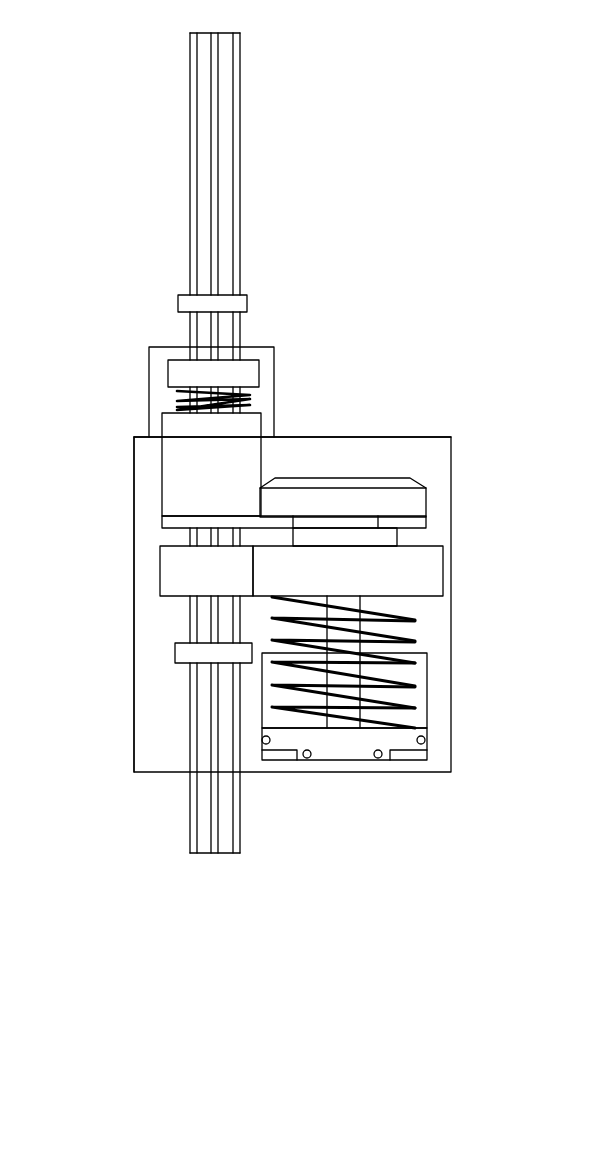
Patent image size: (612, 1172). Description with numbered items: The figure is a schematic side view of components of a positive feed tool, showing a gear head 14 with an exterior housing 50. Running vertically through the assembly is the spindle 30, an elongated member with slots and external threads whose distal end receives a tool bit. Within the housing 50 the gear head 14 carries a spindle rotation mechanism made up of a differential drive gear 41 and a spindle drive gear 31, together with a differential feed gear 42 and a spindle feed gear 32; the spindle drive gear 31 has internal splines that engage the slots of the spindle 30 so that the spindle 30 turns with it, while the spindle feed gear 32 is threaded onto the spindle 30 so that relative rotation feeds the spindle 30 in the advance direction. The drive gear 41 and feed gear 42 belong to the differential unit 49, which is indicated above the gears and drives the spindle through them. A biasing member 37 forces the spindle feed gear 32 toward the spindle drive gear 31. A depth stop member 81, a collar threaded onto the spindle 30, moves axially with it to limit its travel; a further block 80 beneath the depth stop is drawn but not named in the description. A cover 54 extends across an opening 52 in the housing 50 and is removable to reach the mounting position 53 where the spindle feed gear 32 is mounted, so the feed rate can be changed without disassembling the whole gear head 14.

The gear head 14 is at (368, 123).
The spindle 30 is at (203, 111).
The depth stop member 81 is at (245, 302).
The upper stop block 80 is at (243, 378).
The cover 54 is at (275, 366).
The biasing member 37 is at (186, 405).
The opening 52 is at (266, 437).
The mounting position 53 is at (150, 460).
The spindle feed gear 32 is at (178, 486).
The differential unit 49 is at (362, 470).
The differential feed gear 42 is at (410, 500).
The differential drive gear 41 is at (435, 572).
The spindle drive gear 31 is at (165, 572).
The housing 50 is at (134, 687).